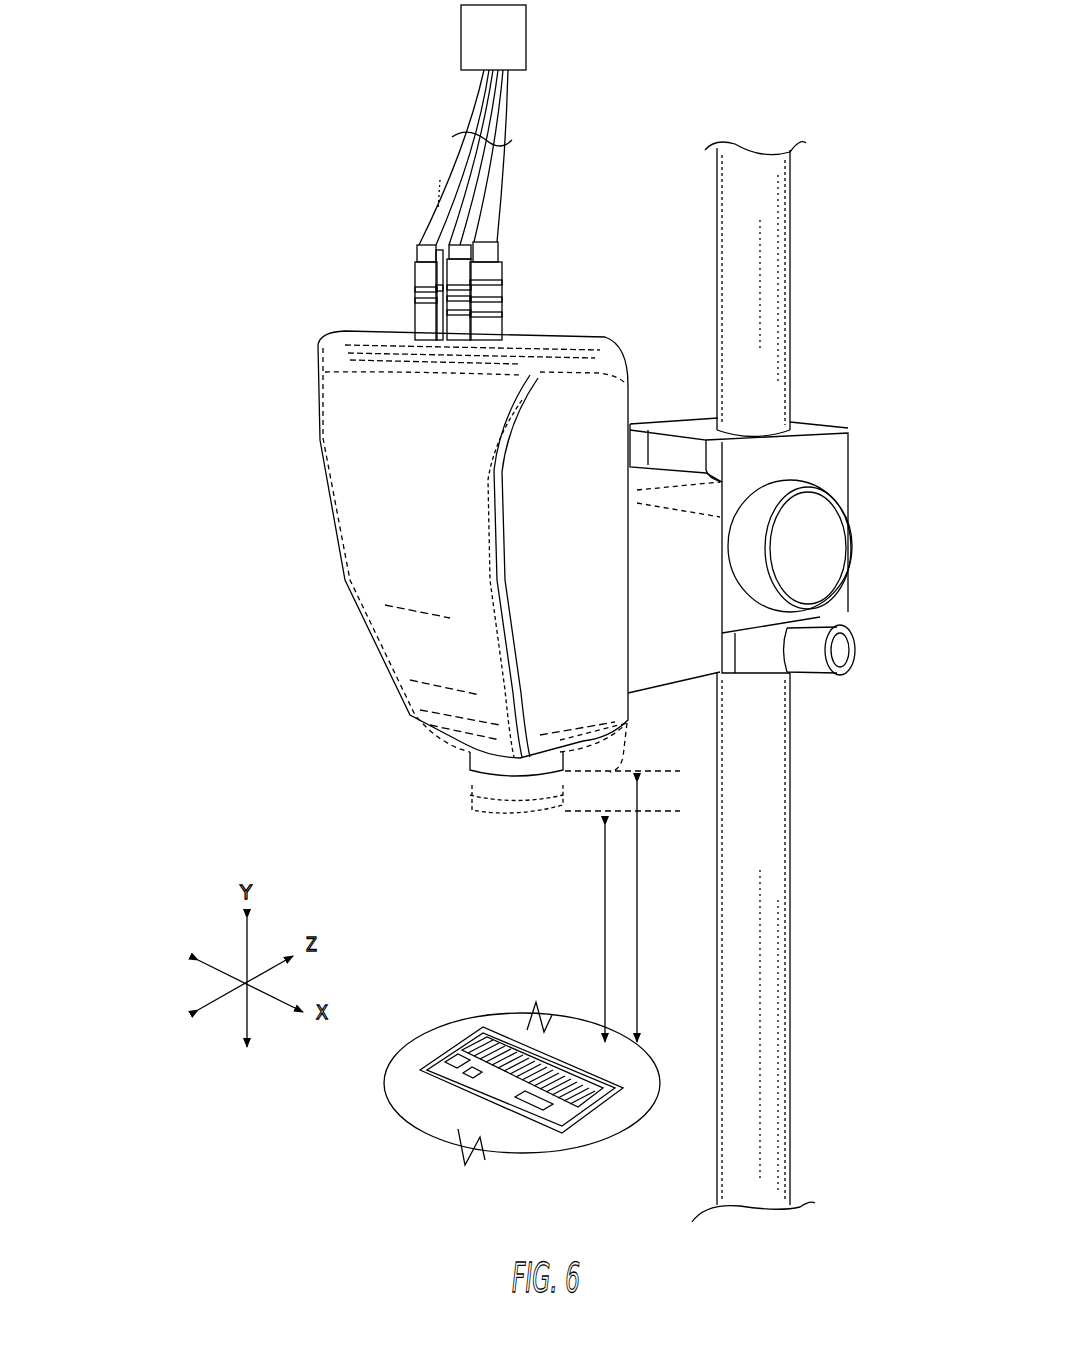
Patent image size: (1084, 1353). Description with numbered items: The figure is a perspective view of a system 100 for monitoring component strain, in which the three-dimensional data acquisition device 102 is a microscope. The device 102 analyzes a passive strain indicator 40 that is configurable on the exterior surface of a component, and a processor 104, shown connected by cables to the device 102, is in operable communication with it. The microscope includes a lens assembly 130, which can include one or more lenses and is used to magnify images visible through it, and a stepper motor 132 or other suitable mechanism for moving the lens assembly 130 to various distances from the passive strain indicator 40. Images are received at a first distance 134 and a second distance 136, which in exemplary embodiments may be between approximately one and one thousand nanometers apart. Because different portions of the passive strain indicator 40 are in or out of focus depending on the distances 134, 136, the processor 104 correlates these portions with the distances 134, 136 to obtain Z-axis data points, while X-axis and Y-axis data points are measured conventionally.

The system 100 is at (222, 415).
The three-dimensional data acquisition device 102 is at (318, 548).
The processor 104 is at (510, 46).
The lens assembly 130 is at (458, 790).
The stepper motor 132 is at (678, 665).
The first distance 134 is at (639, 943).
The second distance 136 is at (603, 884).
The passive strain indicator 40 is at (448, 1097).